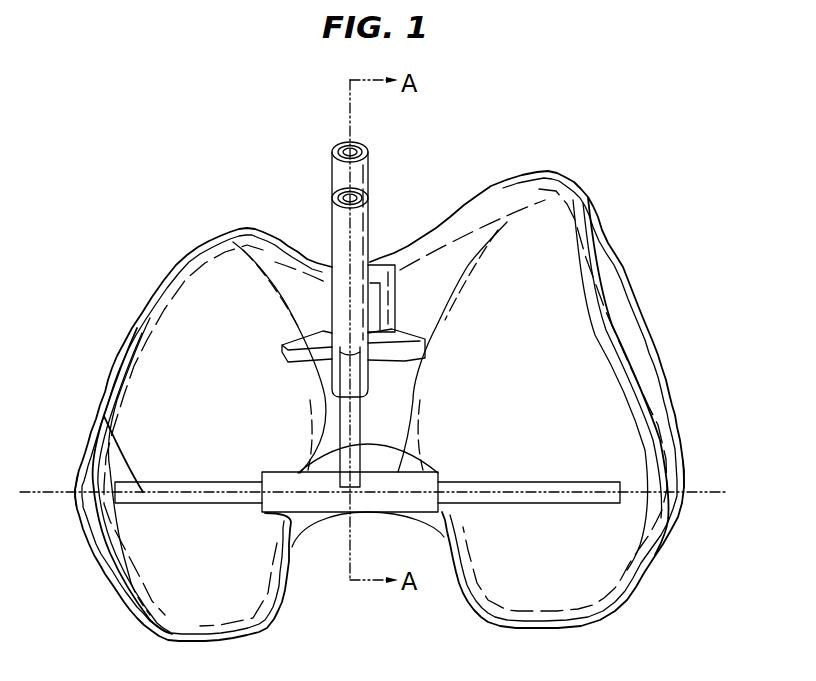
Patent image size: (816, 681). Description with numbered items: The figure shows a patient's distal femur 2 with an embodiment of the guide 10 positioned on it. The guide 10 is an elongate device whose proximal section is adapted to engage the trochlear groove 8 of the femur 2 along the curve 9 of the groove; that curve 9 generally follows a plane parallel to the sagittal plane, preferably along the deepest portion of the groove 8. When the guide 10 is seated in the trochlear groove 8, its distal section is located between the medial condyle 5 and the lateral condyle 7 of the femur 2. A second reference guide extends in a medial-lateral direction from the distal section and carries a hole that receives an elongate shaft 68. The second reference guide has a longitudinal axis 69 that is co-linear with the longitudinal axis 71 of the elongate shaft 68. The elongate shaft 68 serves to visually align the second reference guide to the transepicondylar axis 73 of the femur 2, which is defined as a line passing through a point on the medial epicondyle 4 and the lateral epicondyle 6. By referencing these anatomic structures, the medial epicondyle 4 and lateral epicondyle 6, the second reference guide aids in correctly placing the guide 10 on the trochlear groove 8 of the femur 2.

The femur 2 is at (678, 230).
The medial epicondyle 4 is at (73, 478).
The medial condyle 5 is at (163, 598).
The lateral epicondyle 6 is at (683, 462).
The lateral condyle 7 is at (573, 573).
The trochlear groove 8 is at (370, 413).
The curve 9 is at (396, 262).
The guide 10 is at (278, 169).
The elongate shaft 68 is at (612, 502).
The longitudinal axis 69 is at (710, 492).
The longitudinal axis 71 is at (104, 416).
The transepicondylar axis 73 is at (52, 493).